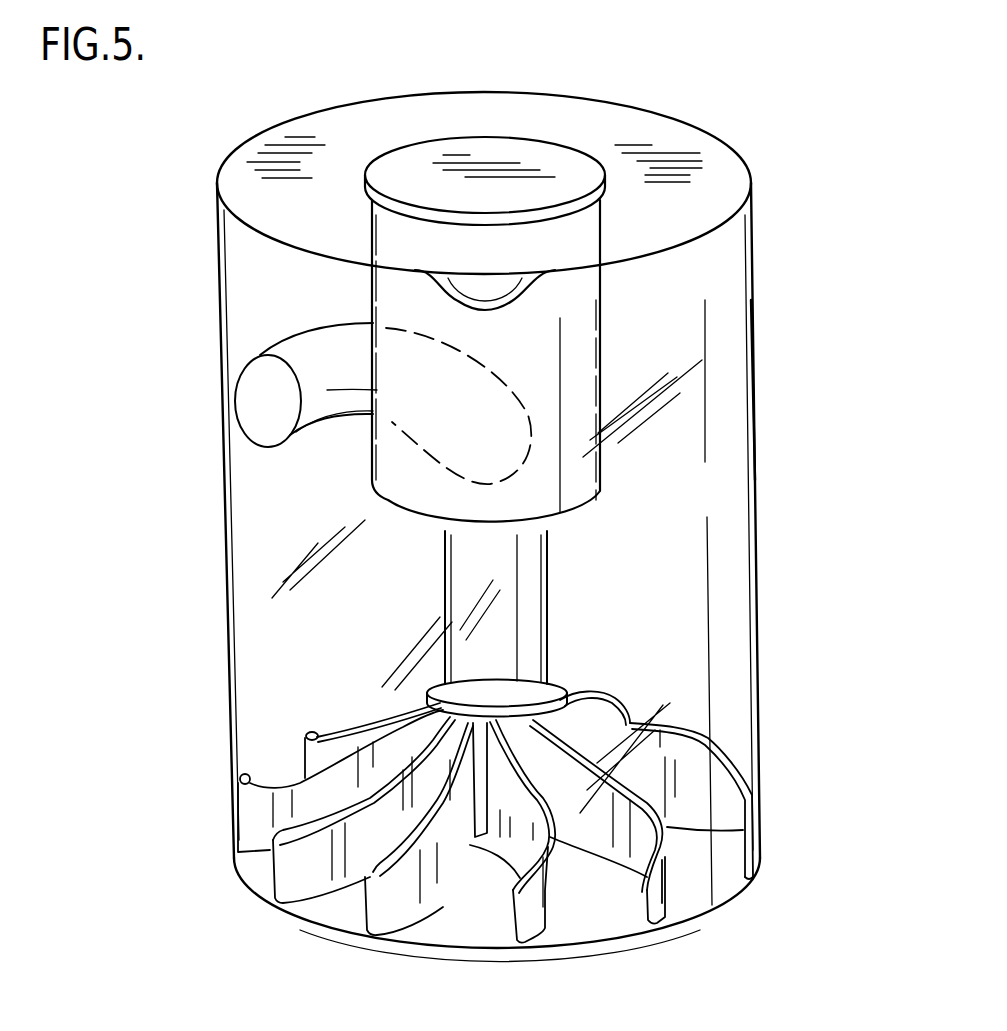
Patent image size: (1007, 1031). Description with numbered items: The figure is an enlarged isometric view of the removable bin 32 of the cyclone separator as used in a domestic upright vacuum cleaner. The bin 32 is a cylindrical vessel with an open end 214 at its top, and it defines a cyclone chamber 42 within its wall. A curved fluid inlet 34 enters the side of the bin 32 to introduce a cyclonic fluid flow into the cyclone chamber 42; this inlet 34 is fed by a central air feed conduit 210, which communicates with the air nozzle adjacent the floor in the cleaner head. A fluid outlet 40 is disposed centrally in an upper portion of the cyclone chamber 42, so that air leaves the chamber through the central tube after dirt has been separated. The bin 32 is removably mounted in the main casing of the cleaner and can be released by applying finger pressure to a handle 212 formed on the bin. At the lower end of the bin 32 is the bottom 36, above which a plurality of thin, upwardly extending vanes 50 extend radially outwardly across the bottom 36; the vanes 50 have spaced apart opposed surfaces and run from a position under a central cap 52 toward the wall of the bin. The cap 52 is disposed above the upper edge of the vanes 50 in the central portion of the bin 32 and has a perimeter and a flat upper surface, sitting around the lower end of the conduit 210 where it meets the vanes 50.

The bin 32 is at (760, 440).
The cyclone chamber 42 is at (742, 375).
The open end 214 is at (738, 150).
The fluid outlet 40 is at (583, 473).
The handle 212 is at (517, 294).
The fluid inlet 34 is at (236, 375).
The central air feed conduit 210 is at (548, 598).
The cap 52 is at (600, 672).
The vanes 50 is at (762, 760).
The bottom 36 is at (590, 900).